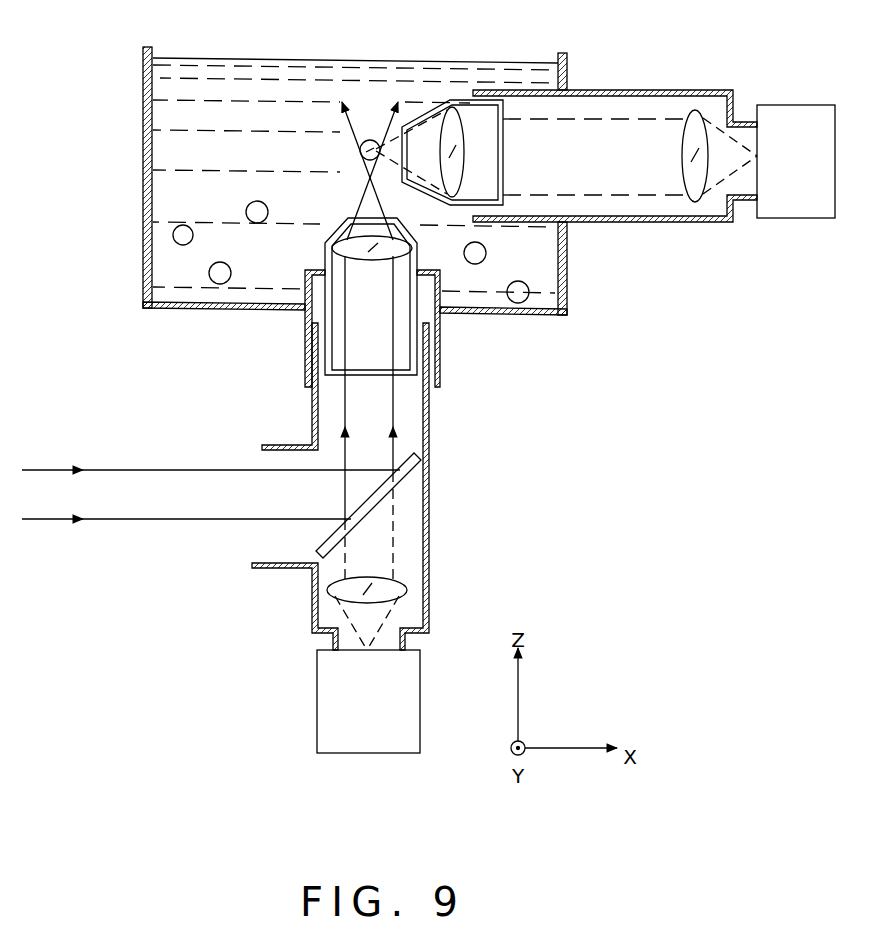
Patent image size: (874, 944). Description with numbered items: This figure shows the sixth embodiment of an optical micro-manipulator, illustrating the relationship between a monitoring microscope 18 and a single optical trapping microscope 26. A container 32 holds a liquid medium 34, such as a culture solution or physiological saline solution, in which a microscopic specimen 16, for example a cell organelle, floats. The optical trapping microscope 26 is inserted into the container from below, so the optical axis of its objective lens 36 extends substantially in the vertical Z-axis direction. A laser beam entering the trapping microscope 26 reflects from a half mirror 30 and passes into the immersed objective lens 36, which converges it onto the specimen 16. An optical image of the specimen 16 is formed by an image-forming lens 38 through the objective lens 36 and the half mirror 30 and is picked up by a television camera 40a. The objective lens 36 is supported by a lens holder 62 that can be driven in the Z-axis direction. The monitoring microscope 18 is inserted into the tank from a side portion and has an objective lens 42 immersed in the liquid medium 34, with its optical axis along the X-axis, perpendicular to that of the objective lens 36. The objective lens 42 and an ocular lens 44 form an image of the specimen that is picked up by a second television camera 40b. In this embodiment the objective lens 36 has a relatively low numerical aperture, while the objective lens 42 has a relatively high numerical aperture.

The microscopic specimen 16 is at (371, 140).
The monitoring microscope 18 is at (628, 82).
The optical trapping microscope 26 is at (430, 516).
The half mirror 30 is at (413, 480).
The container 32 is at (143, 118).
The liquid medium 34 is at (156, 210).
The objective lens 36 is at (332, 248).
The image-forming lens 38 is at (402, 585).
The television camera 40a is at (421, 697).
The television camera 40b is at (788, 103).
The objective lens 42 is at (456, 170).
The ocular lens 44 is at (690, 222).
The lens holder 62 is at (305, 360).